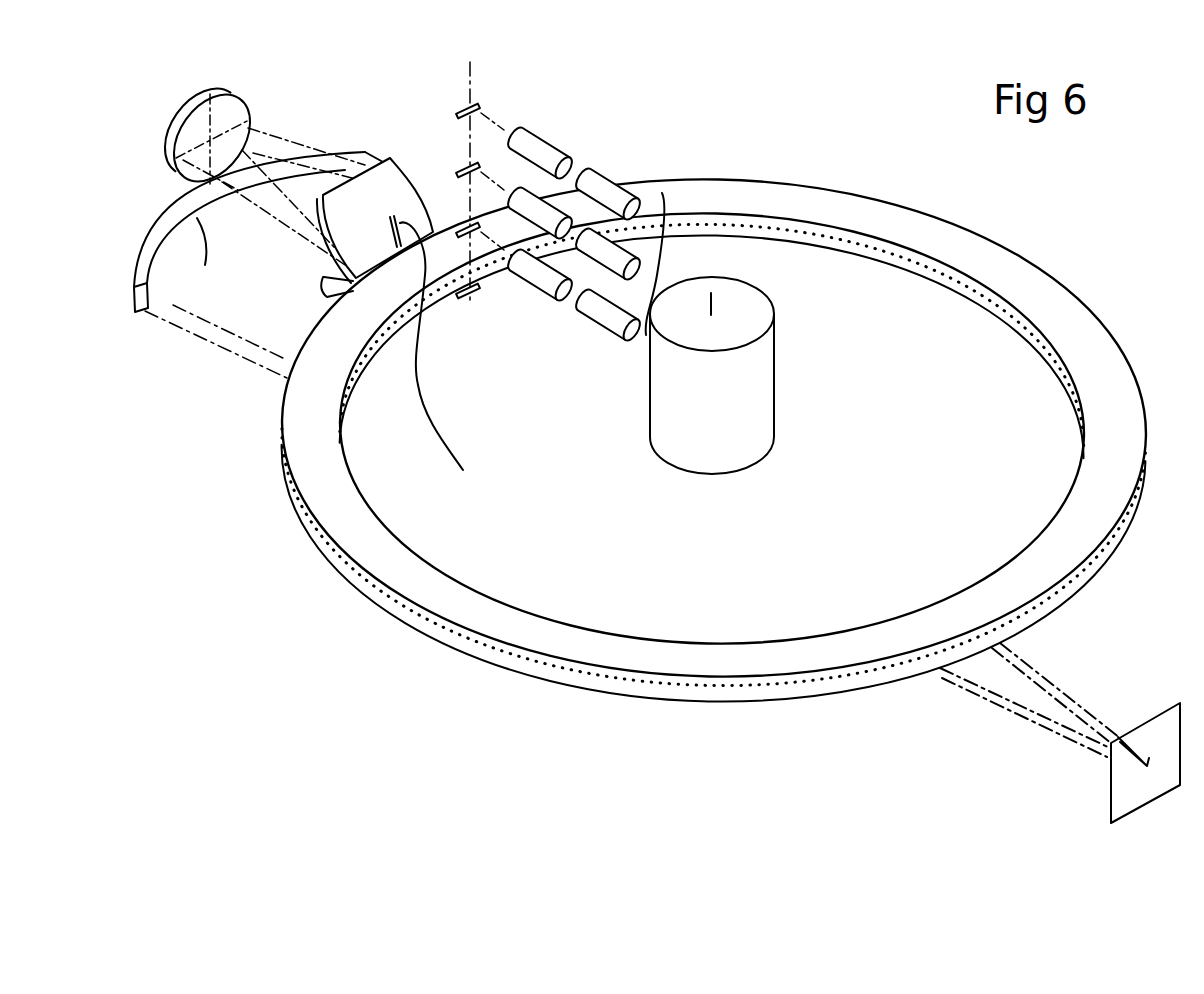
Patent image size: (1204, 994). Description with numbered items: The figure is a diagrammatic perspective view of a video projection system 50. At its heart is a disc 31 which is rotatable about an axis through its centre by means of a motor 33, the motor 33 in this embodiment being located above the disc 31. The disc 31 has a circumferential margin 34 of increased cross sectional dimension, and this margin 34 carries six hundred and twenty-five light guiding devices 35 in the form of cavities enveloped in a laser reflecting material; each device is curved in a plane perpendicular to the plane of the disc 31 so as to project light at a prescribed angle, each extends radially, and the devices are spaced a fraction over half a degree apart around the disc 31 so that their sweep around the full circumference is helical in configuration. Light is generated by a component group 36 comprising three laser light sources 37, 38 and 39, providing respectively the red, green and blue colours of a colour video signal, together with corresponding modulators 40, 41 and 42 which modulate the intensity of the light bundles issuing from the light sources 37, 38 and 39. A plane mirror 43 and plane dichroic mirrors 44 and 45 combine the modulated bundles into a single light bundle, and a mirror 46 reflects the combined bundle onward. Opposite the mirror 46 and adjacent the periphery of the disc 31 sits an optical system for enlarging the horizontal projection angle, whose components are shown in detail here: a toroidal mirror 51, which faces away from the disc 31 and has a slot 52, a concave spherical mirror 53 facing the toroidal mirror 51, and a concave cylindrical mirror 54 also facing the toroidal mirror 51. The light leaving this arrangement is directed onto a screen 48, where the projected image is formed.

The disc 31 is at (886, 200).
The motor 33 is at (775, 393).
The circumferential margin 34 is at (1045, 303).
The light guiding devices 35 is at (1062, 377).
The component group 36 is at (679, 264).
The laser light source 37 is at (588, 332).
The laser light source 38 is at (585, 262).
The laser light source 39 is at (600, 173).
The modulator 40 is at (524, 287).
The modulator 41 is at (530, 192).
The modulator 42 is at (535, 140).
The plane mirror 43 is at (468, 108).
The plane dichroic mirror 44 is at (462, 168).
The plane dichroic mirror 45 is at (456, 232).
The mirror 46 is at (467, 300).
The screen 48 is at (1155, 715).
The video projection system 50 is at (1060, 210).
The toroidal mirror 51 is at (333, 272).
The slot 52 is at (458, 361).
The concave spherical mirror 53 is at (217, 92).
The concave cylindrical mirror 54 is at (258, 265).